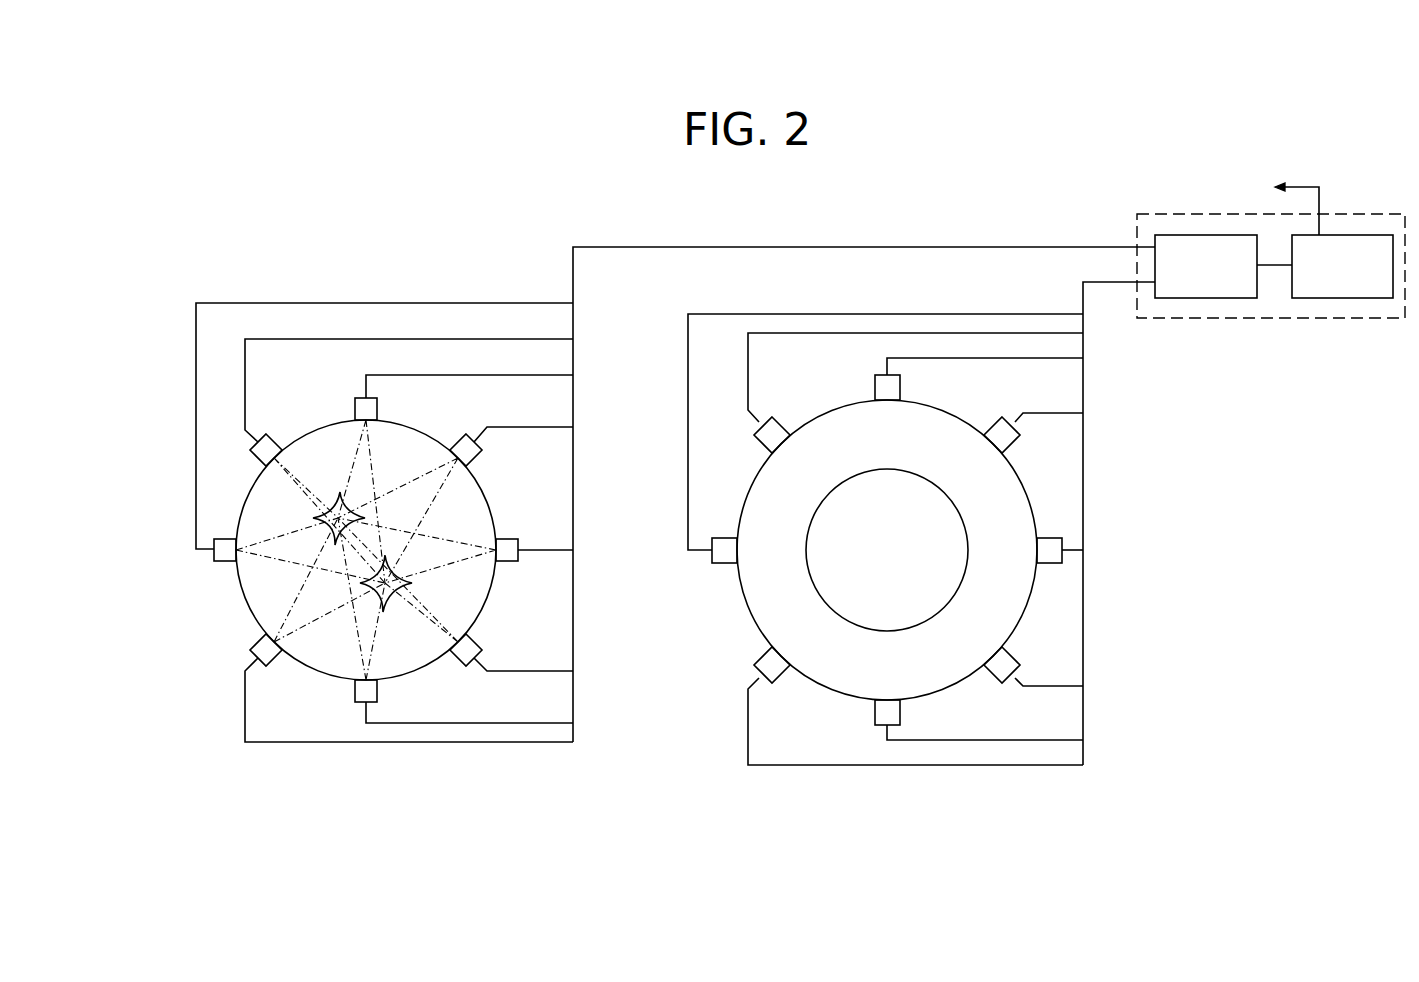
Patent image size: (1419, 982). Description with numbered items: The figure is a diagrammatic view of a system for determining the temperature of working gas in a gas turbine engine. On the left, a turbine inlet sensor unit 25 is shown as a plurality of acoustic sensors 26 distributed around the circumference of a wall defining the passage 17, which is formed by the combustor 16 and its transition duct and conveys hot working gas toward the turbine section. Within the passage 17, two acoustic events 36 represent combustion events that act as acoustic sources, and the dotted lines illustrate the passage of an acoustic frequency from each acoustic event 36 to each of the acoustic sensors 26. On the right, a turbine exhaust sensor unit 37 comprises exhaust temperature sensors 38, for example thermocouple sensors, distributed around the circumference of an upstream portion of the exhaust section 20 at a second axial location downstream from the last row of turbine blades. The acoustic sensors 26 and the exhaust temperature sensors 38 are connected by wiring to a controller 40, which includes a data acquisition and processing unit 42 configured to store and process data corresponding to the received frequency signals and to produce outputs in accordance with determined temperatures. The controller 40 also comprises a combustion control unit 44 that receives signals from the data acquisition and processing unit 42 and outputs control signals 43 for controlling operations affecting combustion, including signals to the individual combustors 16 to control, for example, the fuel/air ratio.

The combustor 16 is at (636, 494).
The passage 17 is at (278, 512).
The exhaust section 20 is at (884, 523).
The turbine inlet sensor unit 25 is at (172, 391).
The acoustic sensor 26 is at (257, 635).
The acoustic event 36 is at (390, 572).
The turbine exhaust sensor unit 37 is at (666, 381).
The exhaust temperature sensor 38 is at (787, 432).
The controller 40 is at (1271, 216).
The data acquisition and processing unit 42 is at (1206, 266).
The control signals 43 is at (1297, 185).
The combustion control unit 44 is at (1342, 266).